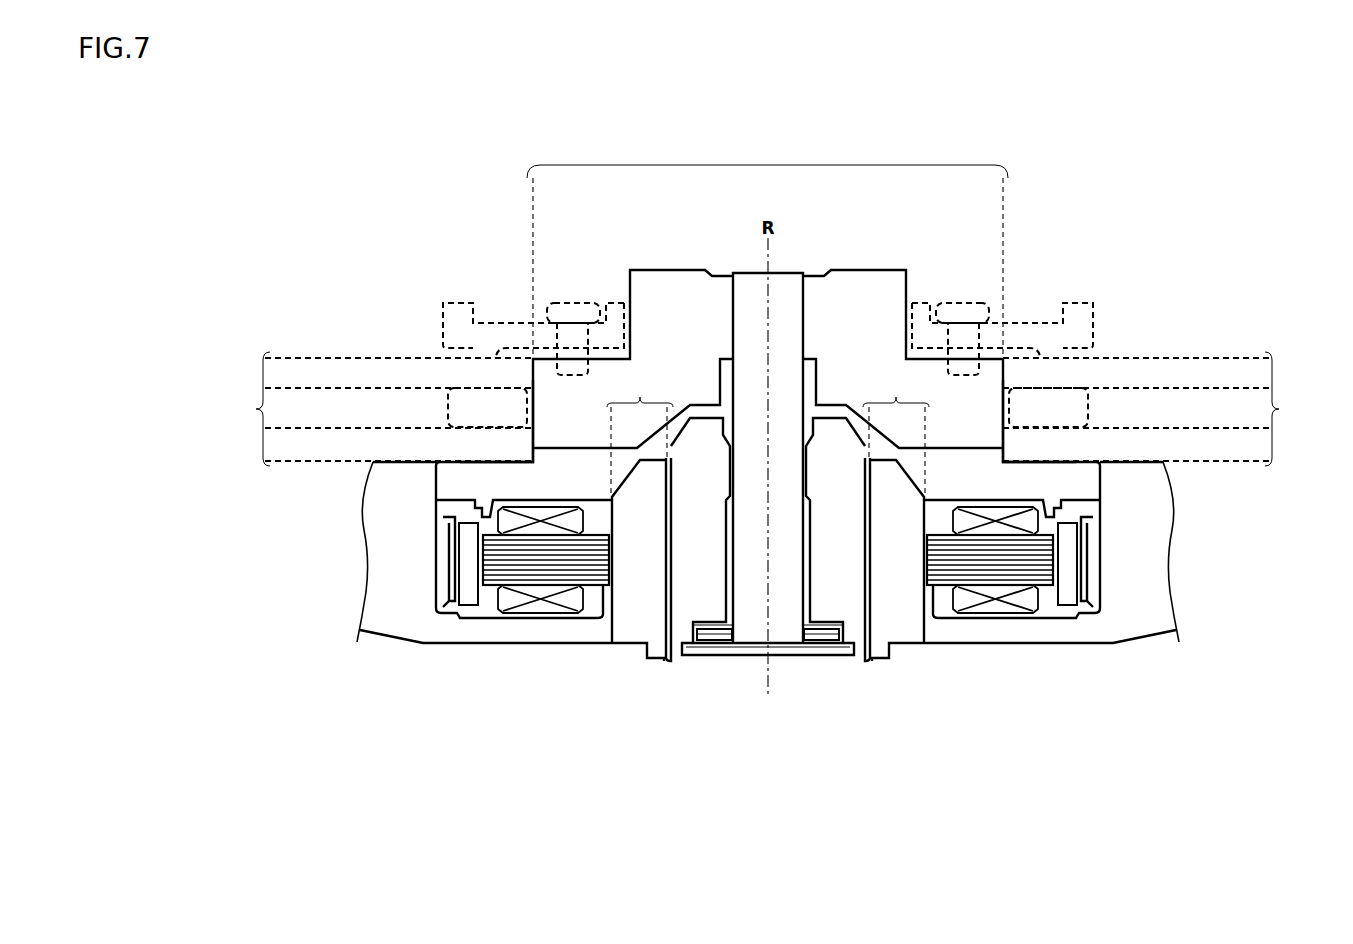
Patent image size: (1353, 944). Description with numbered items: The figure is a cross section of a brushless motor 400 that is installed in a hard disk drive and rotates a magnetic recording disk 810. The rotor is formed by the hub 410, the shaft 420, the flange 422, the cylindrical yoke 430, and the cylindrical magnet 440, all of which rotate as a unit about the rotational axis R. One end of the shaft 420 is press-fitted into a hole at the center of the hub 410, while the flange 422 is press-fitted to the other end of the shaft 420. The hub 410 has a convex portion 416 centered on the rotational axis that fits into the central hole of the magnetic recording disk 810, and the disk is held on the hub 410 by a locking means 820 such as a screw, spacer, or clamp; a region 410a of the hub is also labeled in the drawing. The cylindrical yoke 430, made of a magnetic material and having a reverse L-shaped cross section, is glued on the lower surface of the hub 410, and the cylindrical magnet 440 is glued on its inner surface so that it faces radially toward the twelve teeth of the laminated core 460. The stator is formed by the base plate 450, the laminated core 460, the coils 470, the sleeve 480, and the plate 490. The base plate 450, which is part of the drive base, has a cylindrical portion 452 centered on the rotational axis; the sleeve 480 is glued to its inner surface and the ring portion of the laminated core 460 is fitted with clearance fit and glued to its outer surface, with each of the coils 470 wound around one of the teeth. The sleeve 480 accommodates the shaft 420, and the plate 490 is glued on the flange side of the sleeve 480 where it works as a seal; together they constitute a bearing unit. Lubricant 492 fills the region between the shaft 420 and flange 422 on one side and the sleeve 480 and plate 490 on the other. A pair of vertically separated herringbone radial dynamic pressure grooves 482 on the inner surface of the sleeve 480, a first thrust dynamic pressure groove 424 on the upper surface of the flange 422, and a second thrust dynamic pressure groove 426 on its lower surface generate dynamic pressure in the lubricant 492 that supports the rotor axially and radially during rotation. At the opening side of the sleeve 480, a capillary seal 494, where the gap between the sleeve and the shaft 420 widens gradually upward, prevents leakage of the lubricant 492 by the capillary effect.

The brushless motor 400 is at (752, 785).
The hub 410 is at (849, 285).
The housing flange 410a is at (1068, 458).
The convex portion 416 is at (767, 247).
The shaft 420 is at (752, 285).
The flange 422 is at (823, 636).
The first herringbone-shaped thrust dynamic pressure groove 424 is at (821, 621).
The second herringbone-shaped thrust dynamic pressure groove 426 is at (810, 641).
The cylindrical yoke 430 is at (1086, 518).
The cylindrical magnet 440 is at (1066, 568).
The base plate 450 is at (1164, 605).
The cylindrical portion 452 is at (896, 396).
The laminated core 460 is at (1043, 572).
The coils 470 is at (996, 608).
The sleeve 480 is at (864, 628).
The radial dynamic pressure grooves 482 is at (846, 578).
The plate 490 is at (778, 650).
The lubricant 492 is at (815, 400).
The capillary seal 494 is at (831, 425).
The magnetic recording disk 810 is at (767, 409).
The locking means 820 is at (478, 407).